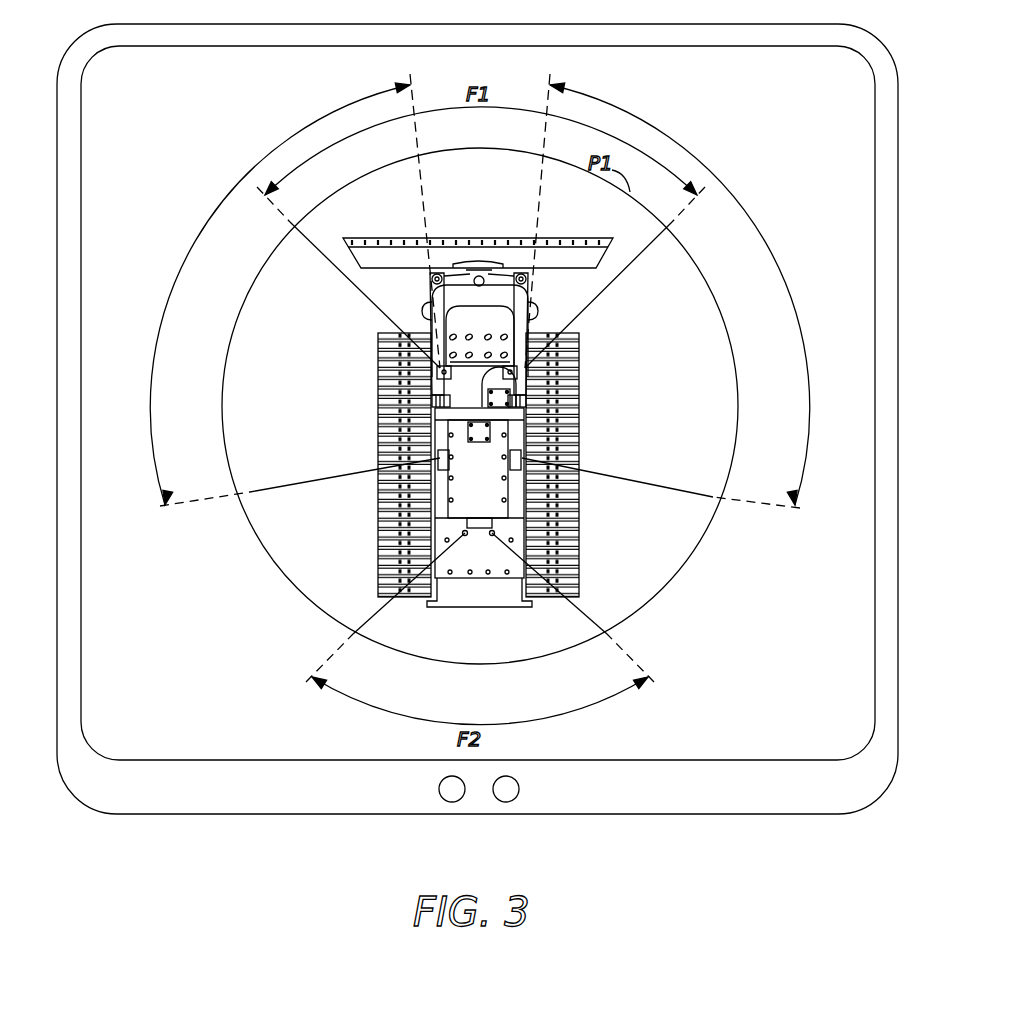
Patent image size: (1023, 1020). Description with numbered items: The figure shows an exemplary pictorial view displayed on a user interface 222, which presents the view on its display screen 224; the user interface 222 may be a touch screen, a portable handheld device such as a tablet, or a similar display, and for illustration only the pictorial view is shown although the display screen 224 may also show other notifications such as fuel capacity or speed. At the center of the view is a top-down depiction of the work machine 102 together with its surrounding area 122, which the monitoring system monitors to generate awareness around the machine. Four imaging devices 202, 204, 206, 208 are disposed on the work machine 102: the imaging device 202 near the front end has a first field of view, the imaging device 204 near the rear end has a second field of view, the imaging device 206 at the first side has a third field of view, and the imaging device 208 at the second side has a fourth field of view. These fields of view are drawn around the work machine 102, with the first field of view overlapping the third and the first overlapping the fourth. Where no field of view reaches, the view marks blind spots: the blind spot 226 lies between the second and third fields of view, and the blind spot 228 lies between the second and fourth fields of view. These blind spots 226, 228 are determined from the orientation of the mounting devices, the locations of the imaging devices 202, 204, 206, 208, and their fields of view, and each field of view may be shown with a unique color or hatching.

The work machine 102 is at (573, 428).
The surrounding area 122 is at (640, 325).
The imaging device 202 is at (517, 370).
The imaging device 204 is at (478, 533).
The imaging device 206 is at (440, 453).
The imaging device 208 is at (521, 458).
The user interface 222 is at (878, 40).
The display screen 224 is at (828, 172).
The blind spot 226 is at (295, 314).
The blind spot 228 is at (666, 314).